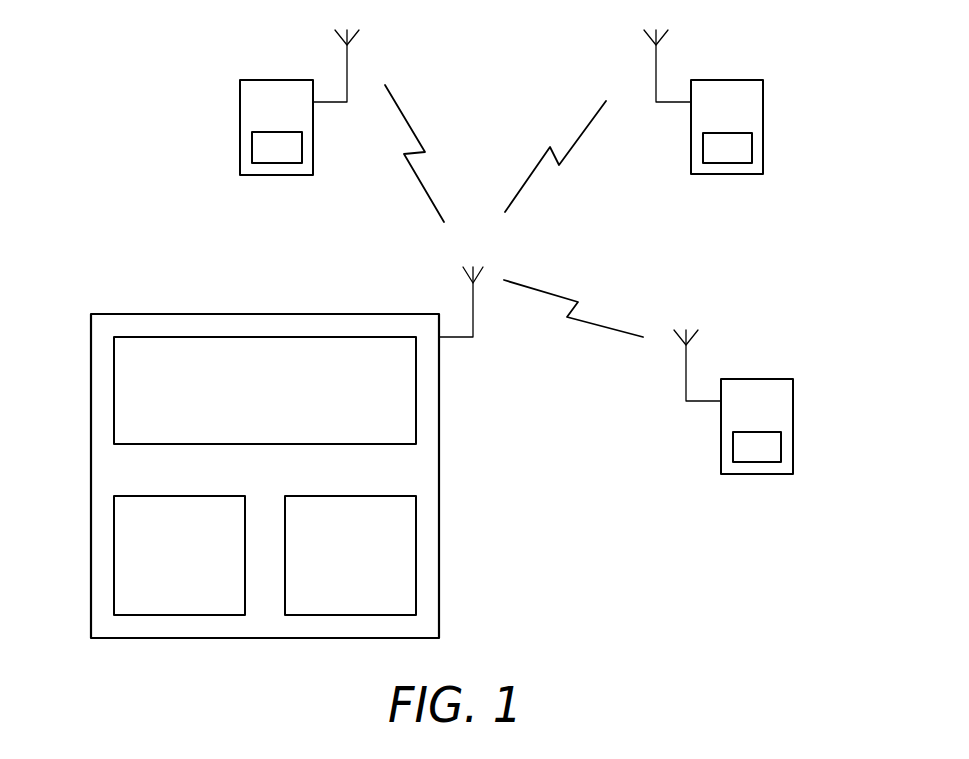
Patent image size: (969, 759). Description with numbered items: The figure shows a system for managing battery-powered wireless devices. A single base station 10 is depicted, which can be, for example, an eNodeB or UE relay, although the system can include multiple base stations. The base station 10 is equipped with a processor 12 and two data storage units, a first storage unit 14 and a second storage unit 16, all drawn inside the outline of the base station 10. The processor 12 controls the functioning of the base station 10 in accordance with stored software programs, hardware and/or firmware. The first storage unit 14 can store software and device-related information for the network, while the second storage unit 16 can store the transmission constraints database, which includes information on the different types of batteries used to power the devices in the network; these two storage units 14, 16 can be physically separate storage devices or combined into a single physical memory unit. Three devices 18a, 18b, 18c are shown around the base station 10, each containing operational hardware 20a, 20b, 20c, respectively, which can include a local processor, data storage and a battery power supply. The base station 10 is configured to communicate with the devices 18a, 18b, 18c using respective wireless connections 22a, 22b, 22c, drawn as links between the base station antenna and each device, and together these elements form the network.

The base station 10 is at (117, 314).
The processor 12 is at (114, 355).
The first storage unit 14 is at (416, 513).
The second storage unit 16 is at (114, 513).
The device 18a is at (240, 97).
The device 18b is at (763, 95).
The device 18c is at (793, 394).
The operational hardware 20a is at (273, 163).
The operational hardware 20b is at (725, 163).
The operational hardware 20c is at (755, 462).
The wireless connection 22a is at (428, 195).
The wireless connection 22b is at (592, 118).
The wireless connection 22c is at (591, 325).